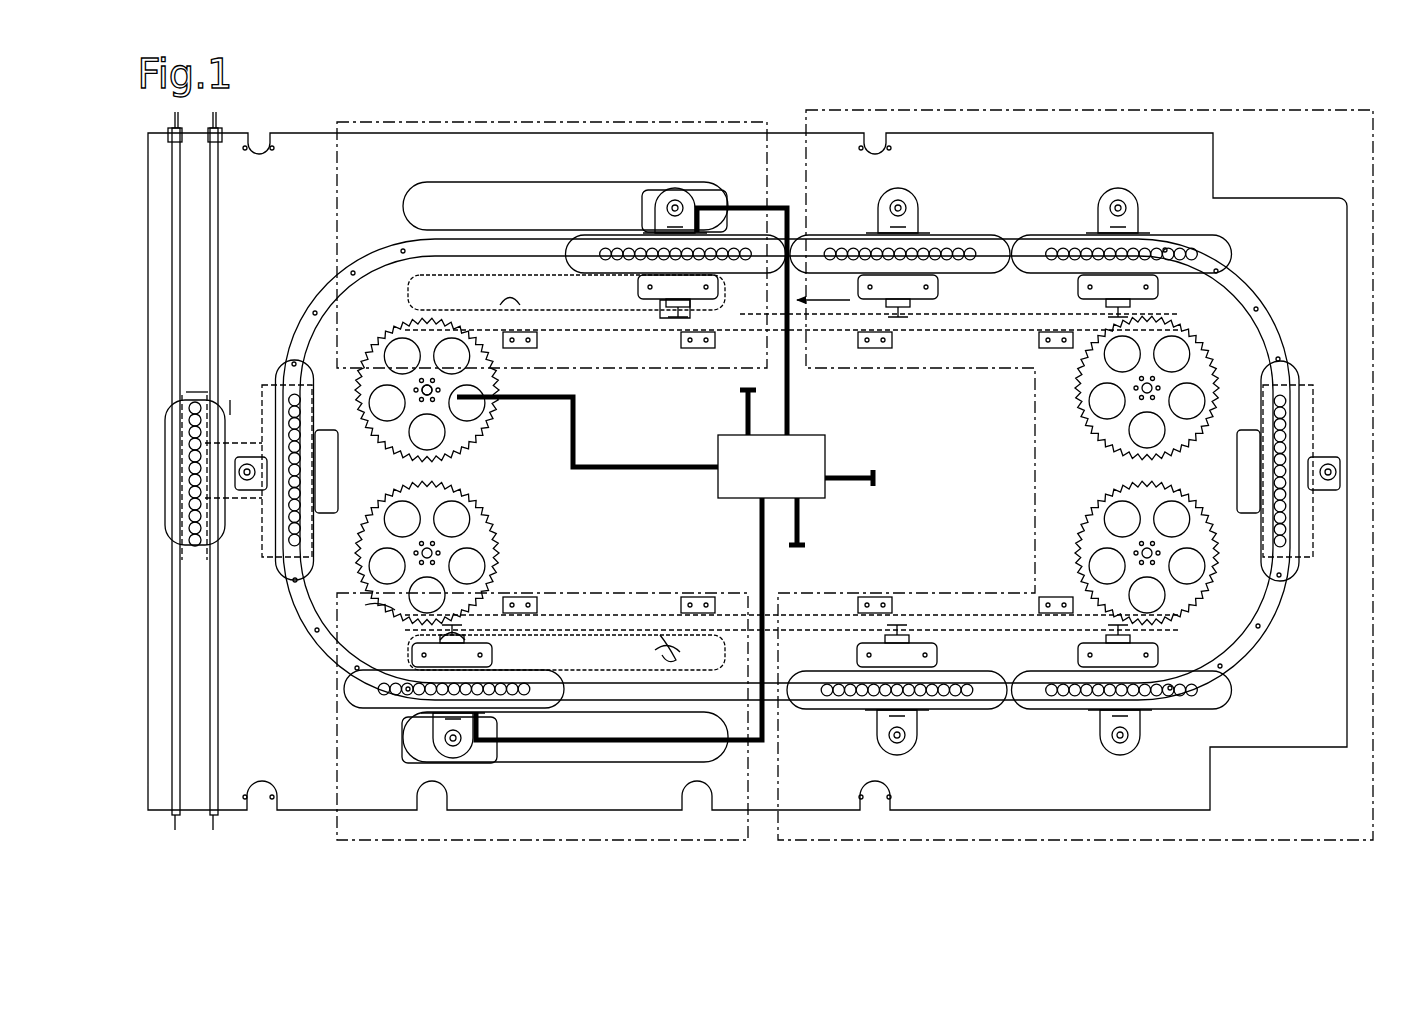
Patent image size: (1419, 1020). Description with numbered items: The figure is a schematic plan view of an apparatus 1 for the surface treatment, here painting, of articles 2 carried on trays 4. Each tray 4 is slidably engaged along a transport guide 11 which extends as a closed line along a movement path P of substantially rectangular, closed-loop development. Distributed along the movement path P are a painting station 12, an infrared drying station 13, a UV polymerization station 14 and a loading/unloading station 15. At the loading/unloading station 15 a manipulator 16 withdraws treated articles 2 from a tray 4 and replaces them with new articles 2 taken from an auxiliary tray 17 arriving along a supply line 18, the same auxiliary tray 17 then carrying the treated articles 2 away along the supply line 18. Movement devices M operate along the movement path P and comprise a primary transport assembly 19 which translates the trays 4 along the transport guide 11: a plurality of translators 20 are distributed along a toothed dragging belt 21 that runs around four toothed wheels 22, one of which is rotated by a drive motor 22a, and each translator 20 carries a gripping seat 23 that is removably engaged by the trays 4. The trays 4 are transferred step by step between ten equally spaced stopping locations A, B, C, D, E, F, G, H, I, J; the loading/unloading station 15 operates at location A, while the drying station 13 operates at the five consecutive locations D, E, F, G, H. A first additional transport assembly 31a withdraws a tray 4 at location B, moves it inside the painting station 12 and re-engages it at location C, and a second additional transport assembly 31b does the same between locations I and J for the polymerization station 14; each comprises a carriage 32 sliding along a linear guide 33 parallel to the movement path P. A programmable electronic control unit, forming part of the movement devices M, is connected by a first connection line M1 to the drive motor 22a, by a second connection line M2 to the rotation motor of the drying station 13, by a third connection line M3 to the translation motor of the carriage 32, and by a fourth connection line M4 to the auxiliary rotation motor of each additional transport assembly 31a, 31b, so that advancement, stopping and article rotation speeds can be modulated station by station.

The apparatus for the surface treatment of articles 1 is at (300, 840).
The articles 2 is at (1170, 248).
The trays 4 is at (352, 707).
The transport guide 11 is at (378, 262).
The painting station 12 is at (565, 848).
The infrared drying station 13 is at (1003, 848).
The UV rays polymerization station 14 is at (718, 112).
The loading/unloading station 15 is at (197, 385).
The manipulator 16 is at (215, 520).
The auxiliary tray 17 is at (235, 400).
The supply line 18 is at (190, 233).
The primary transport assembly 19 is at (1190, 327).
The translators 20 is at (700, 640).
The dragging member 21 is at (370, 607).
The toothed wheels 22 is at (468, 527).
The drive motor 22a is at (485, 410).
The gripping seat 23 is at (662, 650).
The first additional transport assembly 31a is at (480, 762).
The second additional transport assembly 31b is at (652, 185).
The carriage 32 is at (665, 205).
The linear guide 33 is at (585, 212).
The first stopping location A is at (385, 477).
The second stopping location B is at (470, 625).
The third stopping location C is at (668, 640).
The fourth stopping location D is at (910, 640).
The fifth stopping location E is at (1110, 640).
The sixth stopping location F is at (1120, 475).
The seventh stopping location G is at (1108, 280).
The eighth stopping location H is at (905, 315).
The ninth stopping location I is at (672, 318).
The tenth stopping location J is at (505, 315).
The movement devices M is at (1078, 402).
The first connection line M1 is at (590, 460).
The second connection line M2 is at (868, 482).
The third connection line M3 is at (748, 405).
The fourth connection line M4 is at (790, 212).
The movement path P is at (840, 310).